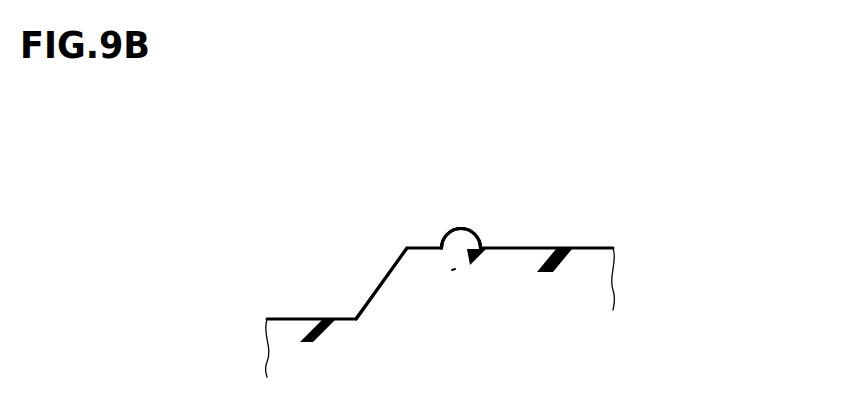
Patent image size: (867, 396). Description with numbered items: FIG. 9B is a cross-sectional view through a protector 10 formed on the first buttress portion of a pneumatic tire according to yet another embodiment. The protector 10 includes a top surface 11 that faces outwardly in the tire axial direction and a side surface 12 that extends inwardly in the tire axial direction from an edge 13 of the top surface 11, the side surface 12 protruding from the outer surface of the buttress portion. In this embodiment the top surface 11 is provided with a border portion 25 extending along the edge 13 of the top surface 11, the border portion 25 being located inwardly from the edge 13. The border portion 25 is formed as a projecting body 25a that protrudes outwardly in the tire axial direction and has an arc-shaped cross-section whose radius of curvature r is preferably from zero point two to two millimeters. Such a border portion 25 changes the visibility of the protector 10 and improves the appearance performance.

The protector 10 is at (597, 183).
The top surface 11 is at (537, 248).
The side surface 12 is at (378, 283).
The edge 13 is at (404, 246).
The border portion 25 is at (447, 228).
The projecting body 25a is at (462, 228).
The radius of curvature r is at (471, 231).